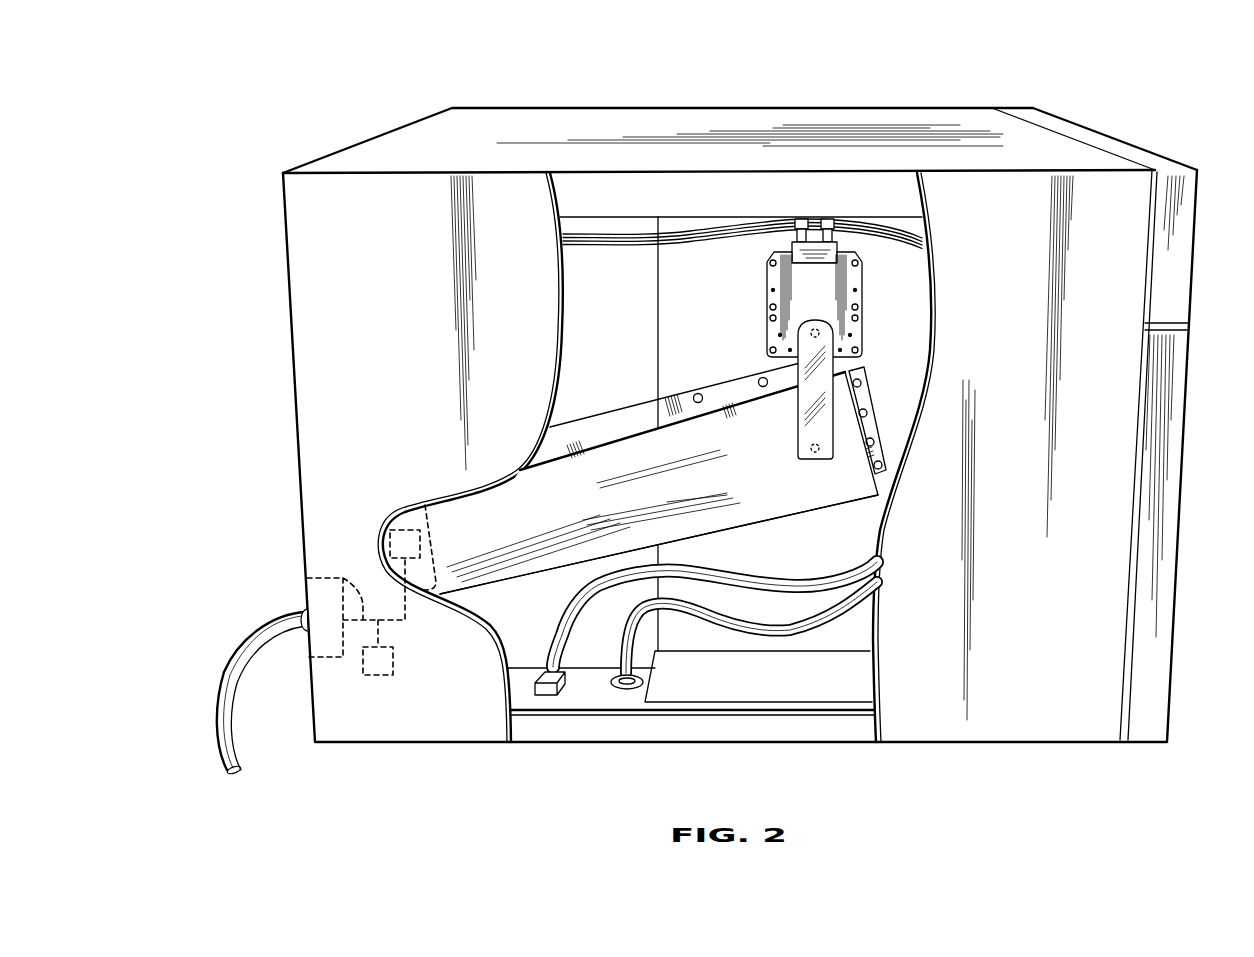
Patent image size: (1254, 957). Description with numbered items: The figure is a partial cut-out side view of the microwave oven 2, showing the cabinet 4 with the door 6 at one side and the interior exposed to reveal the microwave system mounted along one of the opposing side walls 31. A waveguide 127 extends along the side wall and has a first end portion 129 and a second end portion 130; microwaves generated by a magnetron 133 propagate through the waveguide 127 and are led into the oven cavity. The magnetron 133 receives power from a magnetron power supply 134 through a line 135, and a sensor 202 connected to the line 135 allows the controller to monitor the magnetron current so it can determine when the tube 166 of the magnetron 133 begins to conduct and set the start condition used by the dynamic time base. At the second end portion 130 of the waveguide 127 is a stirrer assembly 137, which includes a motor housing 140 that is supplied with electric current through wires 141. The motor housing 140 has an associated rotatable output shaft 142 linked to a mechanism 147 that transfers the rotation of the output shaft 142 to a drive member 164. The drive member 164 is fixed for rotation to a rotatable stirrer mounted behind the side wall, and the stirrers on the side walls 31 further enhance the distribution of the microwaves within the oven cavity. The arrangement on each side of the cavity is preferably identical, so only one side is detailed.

The microwave oven 2 is at (1150, 115).
The cabinet 4 is at (890, 113).
The door 6 is at (1183, 516).
The side walls 31 is at (310, 298).
The waveguide 127 is at (581, 480).
The first end portion 129 is at (465, 592).
The second end portion 130 is at (853, 437).
The magnetron 133 is at (437, 550).
The magnetron power supply 134 is at (320, 578).
The line 135 is at (343, 578).
The stirrer assembly 137 is at (877, 353).
The motor housing 140 is at (770, 280).
The wires 141 is at (802, 220).
The rotatable output shaft 142 is at (822, 333).
The mechanism 147 is at (837, 415).
The drive member 164 is at (813, 460).
The tube 166 is at (400, 530).
The sensor 202 is at (380, 677).